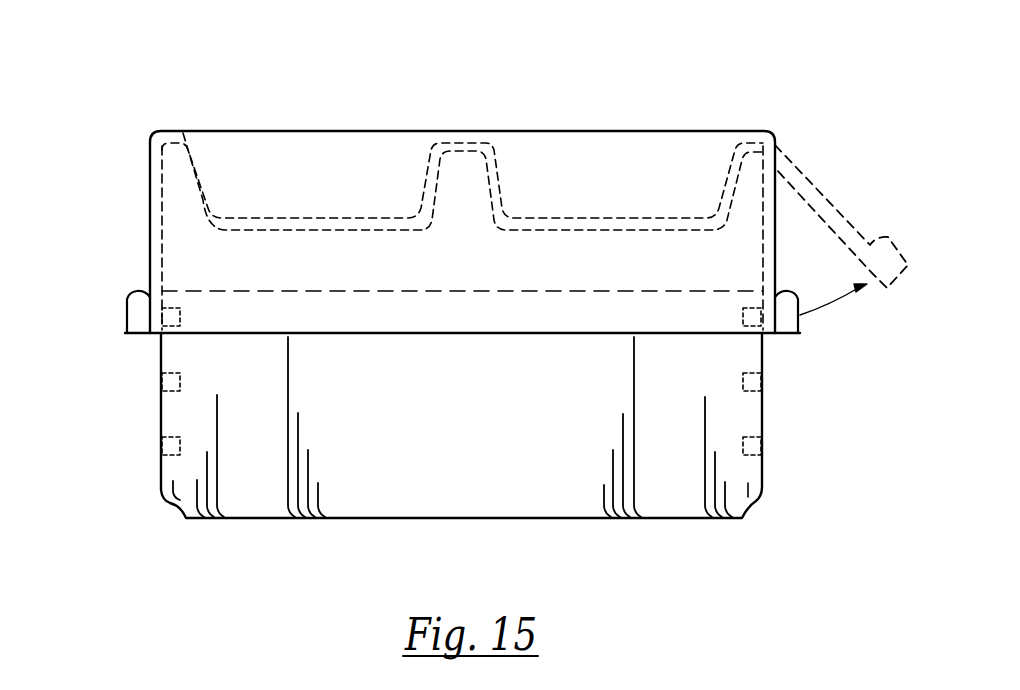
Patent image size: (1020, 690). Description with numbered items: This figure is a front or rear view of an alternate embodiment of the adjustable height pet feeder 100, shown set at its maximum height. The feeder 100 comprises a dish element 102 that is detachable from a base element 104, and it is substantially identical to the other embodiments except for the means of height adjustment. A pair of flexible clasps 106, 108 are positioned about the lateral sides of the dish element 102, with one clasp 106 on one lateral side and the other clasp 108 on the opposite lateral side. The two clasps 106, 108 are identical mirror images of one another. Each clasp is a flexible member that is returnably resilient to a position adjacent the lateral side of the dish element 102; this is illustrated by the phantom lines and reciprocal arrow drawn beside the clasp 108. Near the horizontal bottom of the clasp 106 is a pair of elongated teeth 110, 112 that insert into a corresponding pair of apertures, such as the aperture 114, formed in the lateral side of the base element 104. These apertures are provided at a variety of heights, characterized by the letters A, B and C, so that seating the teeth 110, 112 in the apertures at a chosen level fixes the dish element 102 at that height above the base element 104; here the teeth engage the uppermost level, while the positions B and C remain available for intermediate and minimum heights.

The adjustable height pet feeder 100 is at (107, 75).
The dish element 102 is at (149, 152).
The base element 104 is at (209, 533).
The flexible clasp 106 is at (128, 313).
The flexible clasp 108 is at (806, 335).
The tooth 110 is at (165, 340).
The tooth 112 is at (758, 327).
The aperture 114 is at (178, 330).
The intermediate height position B is at (762, 398).
The minimum height position C is at (762, 463).